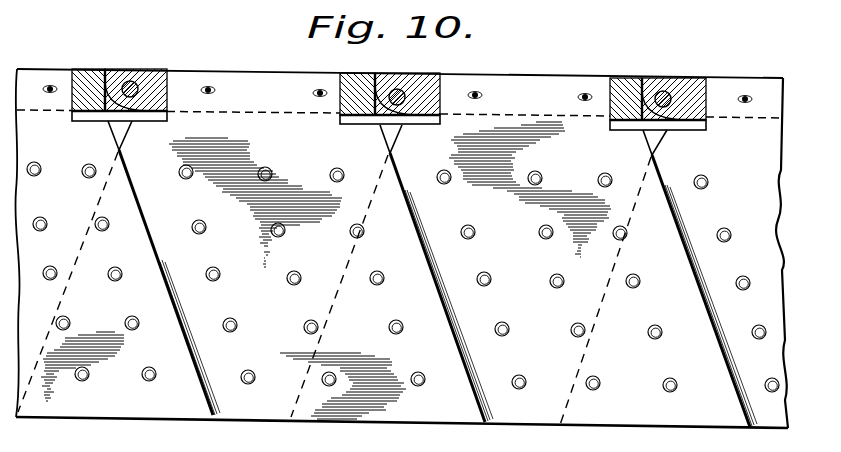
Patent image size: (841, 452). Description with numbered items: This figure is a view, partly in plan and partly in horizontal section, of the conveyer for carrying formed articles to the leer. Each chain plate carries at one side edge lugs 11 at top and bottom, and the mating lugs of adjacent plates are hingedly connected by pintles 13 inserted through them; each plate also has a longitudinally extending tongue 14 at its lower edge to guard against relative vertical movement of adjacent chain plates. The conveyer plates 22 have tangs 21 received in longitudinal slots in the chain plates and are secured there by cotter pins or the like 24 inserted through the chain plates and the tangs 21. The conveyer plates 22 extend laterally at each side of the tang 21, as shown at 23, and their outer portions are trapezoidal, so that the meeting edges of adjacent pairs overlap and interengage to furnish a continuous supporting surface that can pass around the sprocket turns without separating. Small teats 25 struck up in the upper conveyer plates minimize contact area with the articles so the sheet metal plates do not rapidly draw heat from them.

The lugs 11 is at (414, 77).
The pintles 13 is at (403, 118).
The tongue 14 is at (376, 100).
The tangs 21 is at (257, 76).
The conveyer plates 22 is at (207, 433).
The lateral extensions of conveyer plates 23 is at (341, 124).
The cotter pins 24 is at (209, 82).
The teats 25 is at (218, 278).